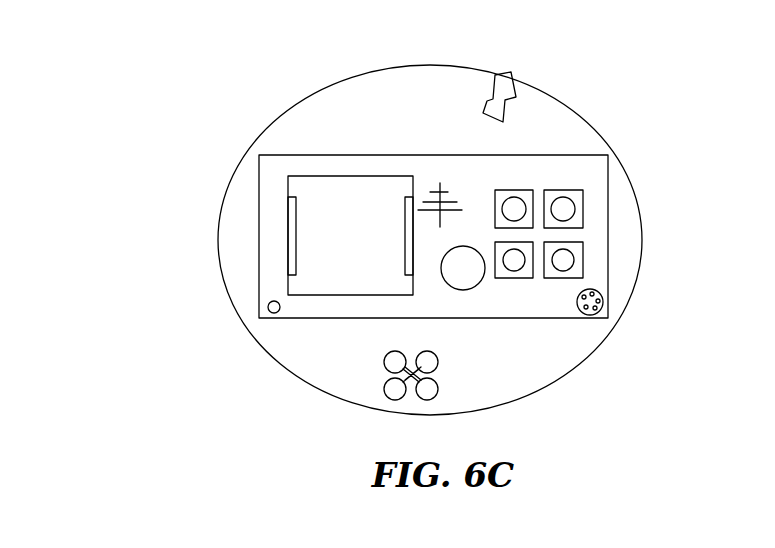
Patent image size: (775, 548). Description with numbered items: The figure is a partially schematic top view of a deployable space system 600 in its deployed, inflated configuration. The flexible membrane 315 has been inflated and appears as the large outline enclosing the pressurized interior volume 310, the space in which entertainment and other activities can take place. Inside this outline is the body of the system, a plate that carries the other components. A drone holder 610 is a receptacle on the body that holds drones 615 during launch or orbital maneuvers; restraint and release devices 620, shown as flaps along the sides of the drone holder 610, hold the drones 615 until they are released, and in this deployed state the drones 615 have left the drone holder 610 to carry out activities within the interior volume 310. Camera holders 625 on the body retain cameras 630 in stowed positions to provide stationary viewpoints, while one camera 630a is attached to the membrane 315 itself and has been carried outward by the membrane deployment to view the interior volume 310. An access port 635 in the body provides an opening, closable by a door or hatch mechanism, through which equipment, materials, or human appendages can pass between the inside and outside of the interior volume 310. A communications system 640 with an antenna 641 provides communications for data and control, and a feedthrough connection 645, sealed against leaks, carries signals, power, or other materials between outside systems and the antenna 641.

The deployable space system 600 is at (270, 112).
The interior volume 310 is at (451, 113).
The flexible membrane 315 is at (440, 64).
The drone holder 610 is at (337, 187).
The drones 615 is at (273, 197).
The restraint and release devices 620 is at (293, 232).
The camera holders 625 is at (514, 190).
The cameras 630 is at (516, 258).
The camera 630a is at (510, 75).
The access ports 635 is at (467, 275).
The communications system 640 is at (440, 170).
The antenna 641 is at (427, 210).
The feedthrough connection 645 is at (600, 296).